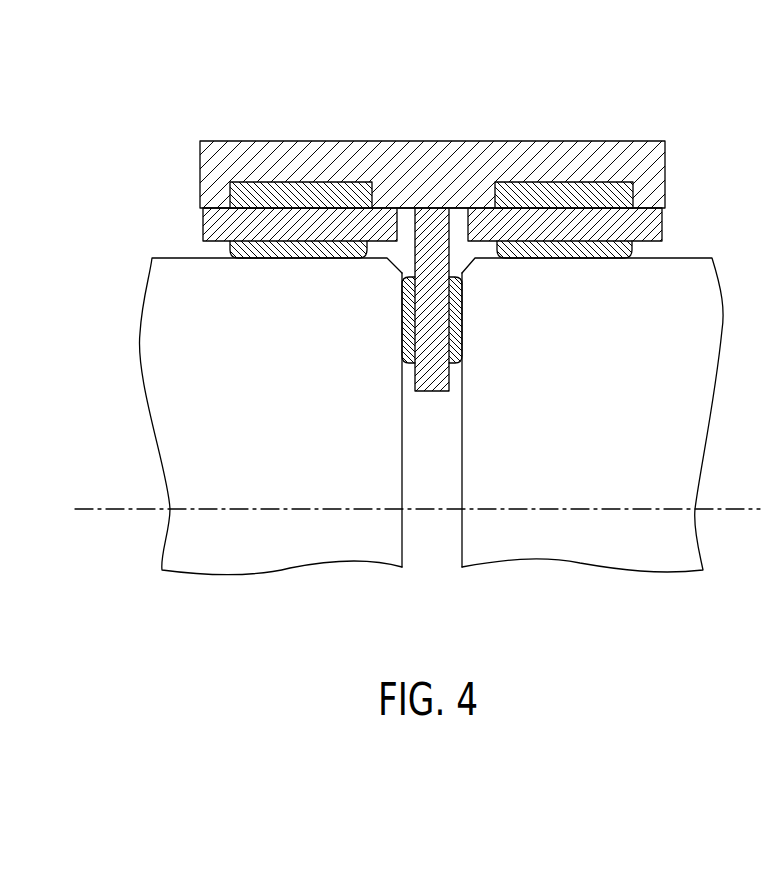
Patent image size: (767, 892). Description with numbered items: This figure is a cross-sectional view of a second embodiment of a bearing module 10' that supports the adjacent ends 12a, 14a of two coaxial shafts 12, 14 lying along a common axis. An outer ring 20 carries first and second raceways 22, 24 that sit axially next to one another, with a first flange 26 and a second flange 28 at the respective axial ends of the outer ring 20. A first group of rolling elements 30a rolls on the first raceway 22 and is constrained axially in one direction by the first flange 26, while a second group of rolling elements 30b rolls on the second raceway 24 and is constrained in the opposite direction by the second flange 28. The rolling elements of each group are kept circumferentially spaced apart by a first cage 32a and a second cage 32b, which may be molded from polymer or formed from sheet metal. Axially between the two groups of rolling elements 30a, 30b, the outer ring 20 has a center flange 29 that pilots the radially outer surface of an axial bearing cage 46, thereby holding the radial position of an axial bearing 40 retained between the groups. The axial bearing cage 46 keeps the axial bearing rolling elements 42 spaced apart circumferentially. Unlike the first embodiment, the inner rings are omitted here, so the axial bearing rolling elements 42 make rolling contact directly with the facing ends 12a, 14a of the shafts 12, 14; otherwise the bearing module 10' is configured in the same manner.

The bearing module 10' is at (417, 338).
The first coaxial shaft 12 is at (273, 456).
The end of first shaft 12a is at (402, 528).
The second coaxial shaft 14 is at (591, 456).
The end of second shaft 14a is at (462, 528).
The outer ring 20 is at (415, 150).
The first raceway 22 is at (277, 182).
The second raceway 24 is at (593, 182).
The first flange 26 is at (212, 192).
The second flange 28 is at (655, 198).
The center flange 29 is at (452, 198).
The first group of rolling elements 30a is at (233, 250).
The second group of rolling elements 30b is at (625, 248).
The first cage 32a is at (208, 223).
The second cage 32b is at (652, 225).
The axial bearing 40 is at (407, 218).
The axial bearing rolling elements 42 is at (407, 318).
The axial bearing cage 46 is at (430, 225).